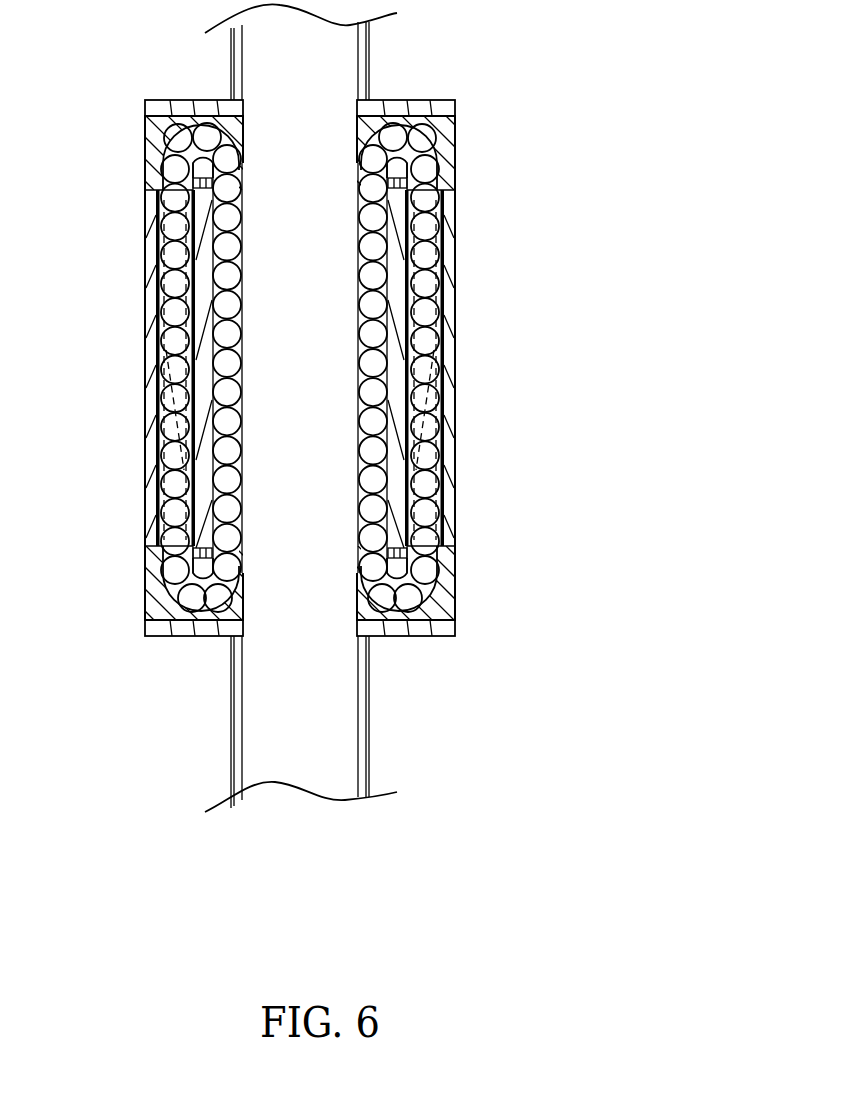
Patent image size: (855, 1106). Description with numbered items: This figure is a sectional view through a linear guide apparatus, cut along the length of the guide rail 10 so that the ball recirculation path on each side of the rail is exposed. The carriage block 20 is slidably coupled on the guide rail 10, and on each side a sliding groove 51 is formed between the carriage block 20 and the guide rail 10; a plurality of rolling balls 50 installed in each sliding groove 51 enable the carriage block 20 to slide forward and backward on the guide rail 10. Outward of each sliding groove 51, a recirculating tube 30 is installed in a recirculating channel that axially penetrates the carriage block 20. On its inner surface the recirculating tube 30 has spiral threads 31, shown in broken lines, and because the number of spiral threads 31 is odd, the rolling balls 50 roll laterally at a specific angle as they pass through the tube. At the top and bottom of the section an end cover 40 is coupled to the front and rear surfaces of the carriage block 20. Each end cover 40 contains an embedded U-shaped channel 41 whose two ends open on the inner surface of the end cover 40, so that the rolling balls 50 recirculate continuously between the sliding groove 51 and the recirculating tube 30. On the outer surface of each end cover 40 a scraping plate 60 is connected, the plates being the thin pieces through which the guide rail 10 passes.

The guide rail 10 is at (378, 745).
The carriage block 20 is at (458, 243).
The recirculating tube 30 is at (147, 212).
The spiral threads 31 is at (157, 436).
The end cover 40 is at (437, 104).
The U-shaped channel 41 is at (187, 125).
The rolling balls 50 is at (150, 290).
The sliding groove 51 is at (242, 236).
The scraping plate 60 is at (391, 104).